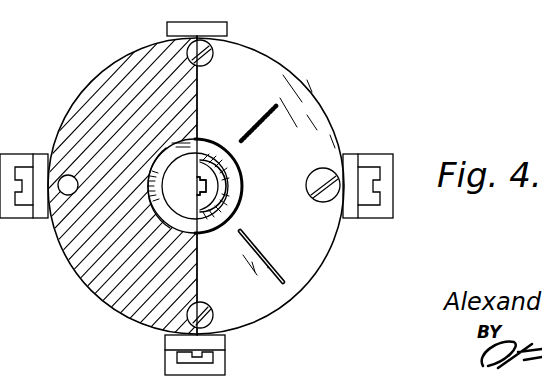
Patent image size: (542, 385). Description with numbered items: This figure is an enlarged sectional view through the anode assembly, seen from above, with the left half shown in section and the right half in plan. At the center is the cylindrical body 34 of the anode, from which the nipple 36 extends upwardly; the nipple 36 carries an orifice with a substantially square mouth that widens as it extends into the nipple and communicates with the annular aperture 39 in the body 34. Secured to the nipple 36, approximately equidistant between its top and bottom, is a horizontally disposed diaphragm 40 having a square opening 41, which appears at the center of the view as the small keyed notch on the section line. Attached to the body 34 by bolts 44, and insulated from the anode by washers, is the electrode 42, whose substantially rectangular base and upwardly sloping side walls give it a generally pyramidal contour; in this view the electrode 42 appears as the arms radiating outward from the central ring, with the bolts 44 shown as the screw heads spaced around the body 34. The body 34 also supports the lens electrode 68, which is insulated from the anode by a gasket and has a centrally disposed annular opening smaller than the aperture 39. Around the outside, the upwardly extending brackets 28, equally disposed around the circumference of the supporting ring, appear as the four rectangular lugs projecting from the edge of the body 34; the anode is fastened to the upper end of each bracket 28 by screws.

The bracket 28 is at (228, 27).
The cylindrical body 34 is at (110, 63).
The nipple 36 is at (229, 187).
The annular aperture 39 is at (172, 233).
The diaphragm 40 is at (221, 204).
The square opening 41 is at (200, 181).
The electrode 42 is at (252, 158).
The bolts 44 is at (208, 62).
The lens electrode 68 is at (162, 201).